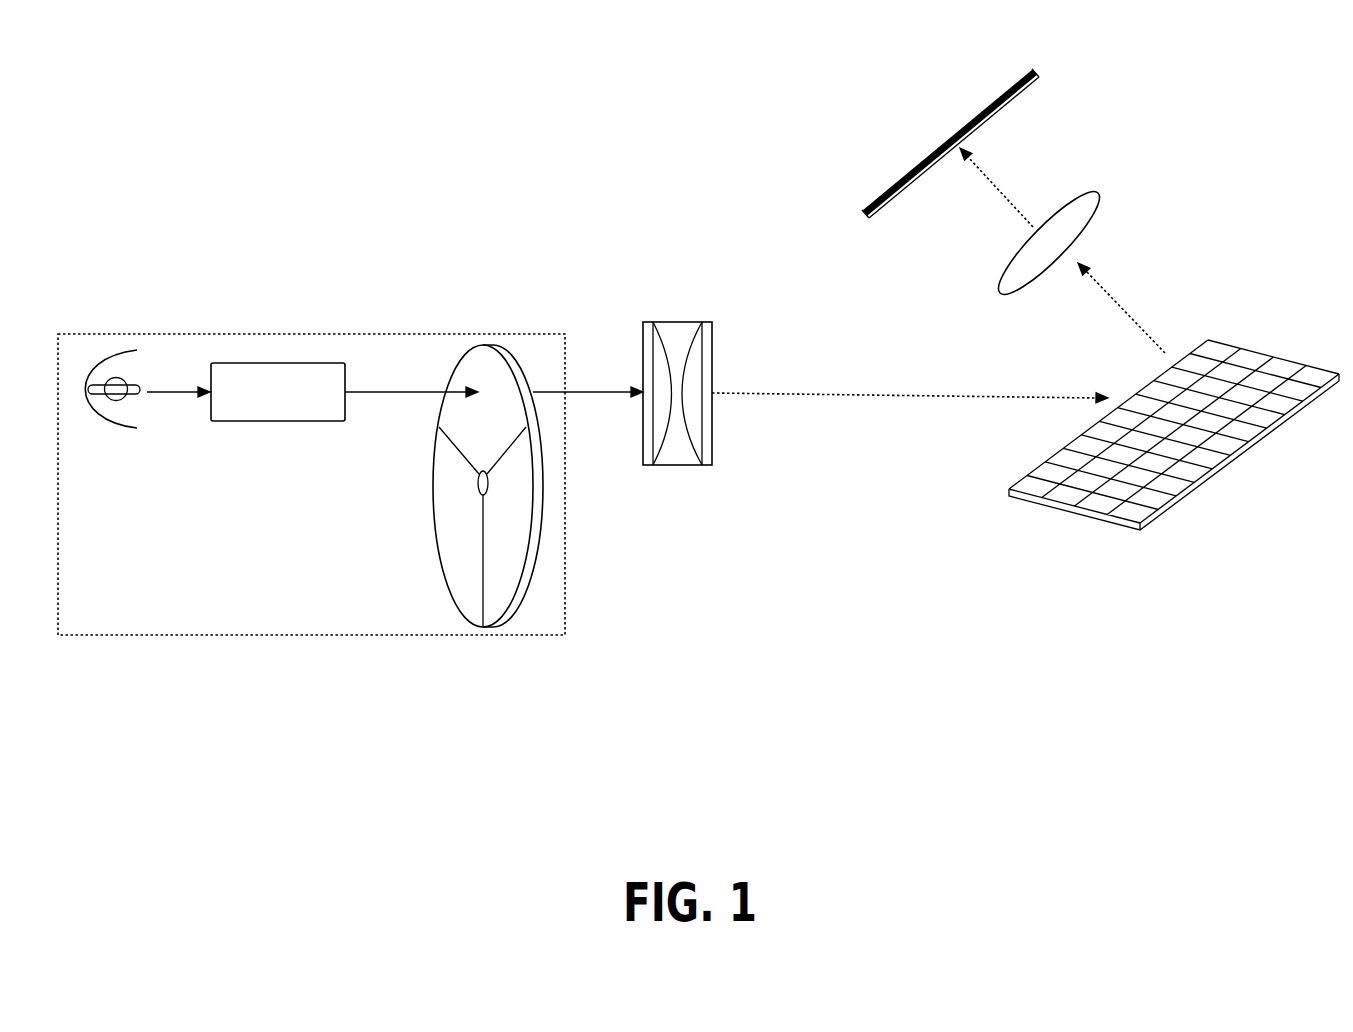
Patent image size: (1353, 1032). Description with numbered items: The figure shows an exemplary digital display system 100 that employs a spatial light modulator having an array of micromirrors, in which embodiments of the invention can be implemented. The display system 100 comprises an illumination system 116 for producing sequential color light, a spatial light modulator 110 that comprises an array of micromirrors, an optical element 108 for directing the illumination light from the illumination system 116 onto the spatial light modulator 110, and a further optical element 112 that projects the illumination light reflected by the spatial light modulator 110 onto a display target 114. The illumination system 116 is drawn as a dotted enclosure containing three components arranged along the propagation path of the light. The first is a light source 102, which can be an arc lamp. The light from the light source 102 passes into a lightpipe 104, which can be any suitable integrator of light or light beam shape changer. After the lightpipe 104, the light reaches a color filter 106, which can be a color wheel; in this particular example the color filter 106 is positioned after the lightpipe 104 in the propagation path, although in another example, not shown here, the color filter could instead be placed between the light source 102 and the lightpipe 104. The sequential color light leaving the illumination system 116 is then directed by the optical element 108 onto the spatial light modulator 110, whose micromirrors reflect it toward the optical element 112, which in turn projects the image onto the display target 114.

The display system 100 is at (500, 197).
The light source 102 is at (103, 343).
The lightpipe 104 is at (283, 363).
The color filter 106 is at (498, 342).
The optical element 108 is at (677, 313).
The spatial light modulator 110 is at (1230, 330).
The optical element 112 is at (1090, 192).
The display target 114 is at (993, 80).
The illumination system 116 is at (308, 635).